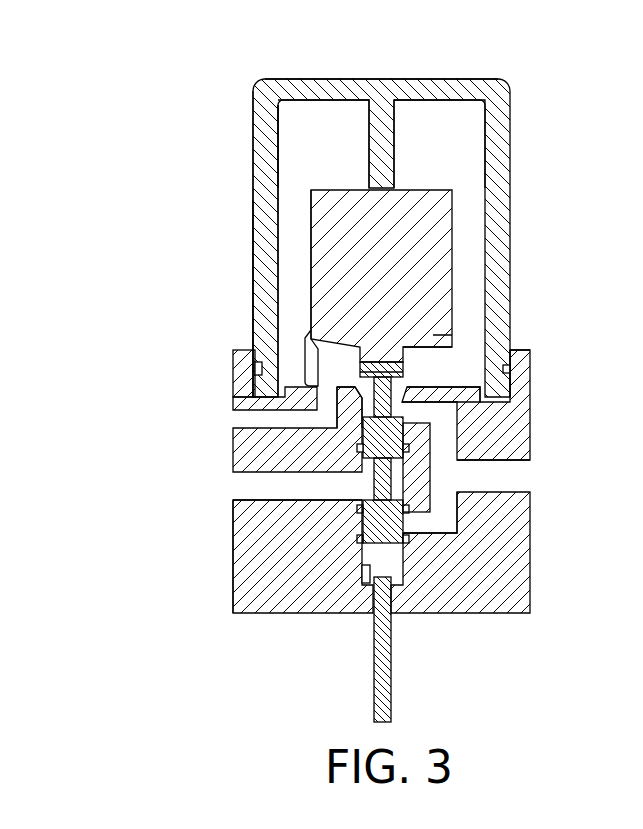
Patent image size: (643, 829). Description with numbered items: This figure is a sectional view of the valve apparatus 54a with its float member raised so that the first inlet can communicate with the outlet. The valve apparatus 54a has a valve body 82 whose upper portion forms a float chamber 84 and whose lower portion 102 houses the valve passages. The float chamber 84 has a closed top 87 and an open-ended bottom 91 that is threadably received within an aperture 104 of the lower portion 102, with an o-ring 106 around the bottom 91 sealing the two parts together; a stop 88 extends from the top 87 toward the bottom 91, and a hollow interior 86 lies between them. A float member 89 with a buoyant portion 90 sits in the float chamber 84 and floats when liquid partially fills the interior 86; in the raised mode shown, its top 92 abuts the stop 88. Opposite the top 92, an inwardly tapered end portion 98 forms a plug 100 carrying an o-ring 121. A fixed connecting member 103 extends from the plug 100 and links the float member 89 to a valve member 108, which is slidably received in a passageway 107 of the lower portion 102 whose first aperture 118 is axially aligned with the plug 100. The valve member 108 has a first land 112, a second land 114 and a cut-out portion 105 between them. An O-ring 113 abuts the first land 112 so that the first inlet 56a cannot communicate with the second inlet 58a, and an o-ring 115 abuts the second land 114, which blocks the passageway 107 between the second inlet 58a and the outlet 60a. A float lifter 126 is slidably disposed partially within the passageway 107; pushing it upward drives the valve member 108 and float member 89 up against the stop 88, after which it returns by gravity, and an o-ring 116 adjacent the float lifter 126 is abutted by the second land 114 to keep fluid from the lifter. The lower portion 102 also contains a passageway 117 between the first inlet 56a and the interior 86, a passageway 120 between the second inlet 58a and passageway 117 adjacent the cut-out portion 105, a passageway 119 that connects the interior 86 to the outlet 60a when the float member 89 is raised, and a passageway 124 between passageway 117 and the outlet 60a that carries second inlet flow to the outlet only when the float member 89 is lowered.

The valve apparatus 54a is at (242, 77).
The closed top 87 is at (422, 78).
The float chamber 84 is at (253, 165).
The hollow interior 86 is at (334, 156).
The stop 88 is at (398, 150).
The valve body 82 is at (216, 270).
The buoyant portion 90 is at (392, 268).
The float member 89 is at (308, 240).
The top 92 is at (425, 355).
The o-ring 121 is at (410, 374).
The end portion 98 is at (300, 368).
The open-ended bottom 91 is at (236, 352).
The fixed connecting member 103 is at (256, 368).
The passageway 117 is at (265, 398).
The first inlet 56a is at (232, 428).
The valve member 108 is at (361, 437).
The first land 112 is at (409, 449).
The o-ring 115 is at (357, 507).
The cut-out portion 105 is at (400, 520).
The O-ring 113 is at (410, 507).
The o-ring 116 is at (408, 539).
The aperture 104 is at (513, 346).
The o-ring 106 is at (510, 369).
The plug 100 is at (530, 353).
The first aperture 118 is at (478, 395).
The passageway 119 is at (470, 435).
The outlet 60a is at (515, 485).
The lower portion 102 is at (232, 581).
The passageway 124 is at (528, 600).
The second land 114 is at (415, 514).
The second inlet 58a is at (232, 489).
The passageway 120 is at (232, 528).
The passageway 107 is at (362, 566).
The float lifter 126 is at (373, 690).